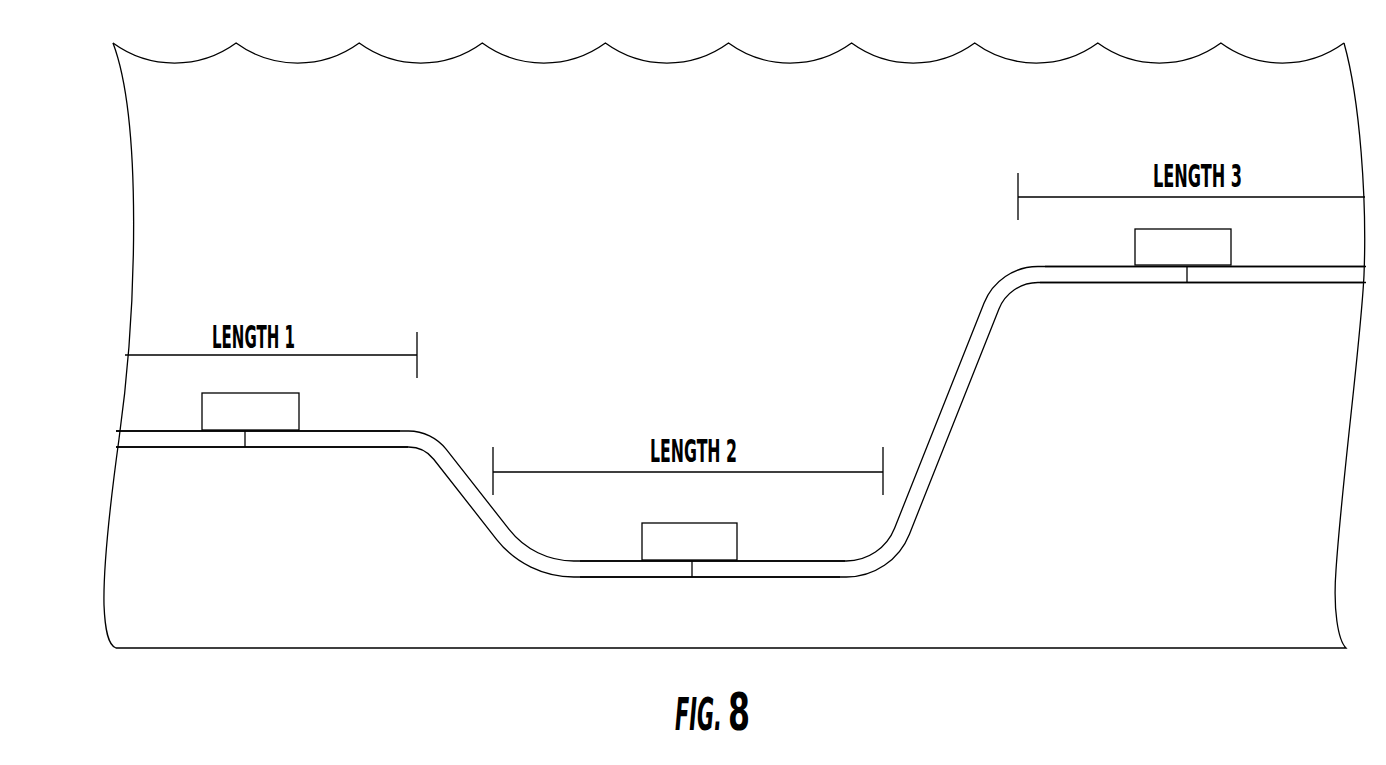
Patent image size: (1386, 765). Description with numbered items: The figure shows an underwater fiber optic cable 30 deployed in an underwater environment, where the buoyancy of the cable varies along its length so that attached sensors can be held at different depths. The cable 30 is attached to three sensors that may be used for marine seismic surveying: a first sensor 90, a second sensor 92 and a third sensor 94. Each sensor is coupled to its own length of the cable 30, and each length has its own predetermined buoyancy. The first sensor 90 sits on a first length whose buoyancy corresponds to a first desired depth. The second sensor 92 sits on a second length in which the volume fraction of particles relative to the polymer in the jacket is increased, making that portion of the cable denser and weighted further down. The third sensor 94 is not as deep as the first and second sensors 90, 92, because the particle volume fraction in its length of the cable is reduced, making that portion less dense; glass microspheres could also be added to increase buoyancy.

The underwater fiber optic cable 30 is at (957, 327).
The first sensor 90 is at (299, 415).
The second sensor 92 is at (737, 546).
The third sensor 94 is at (1231, 250).